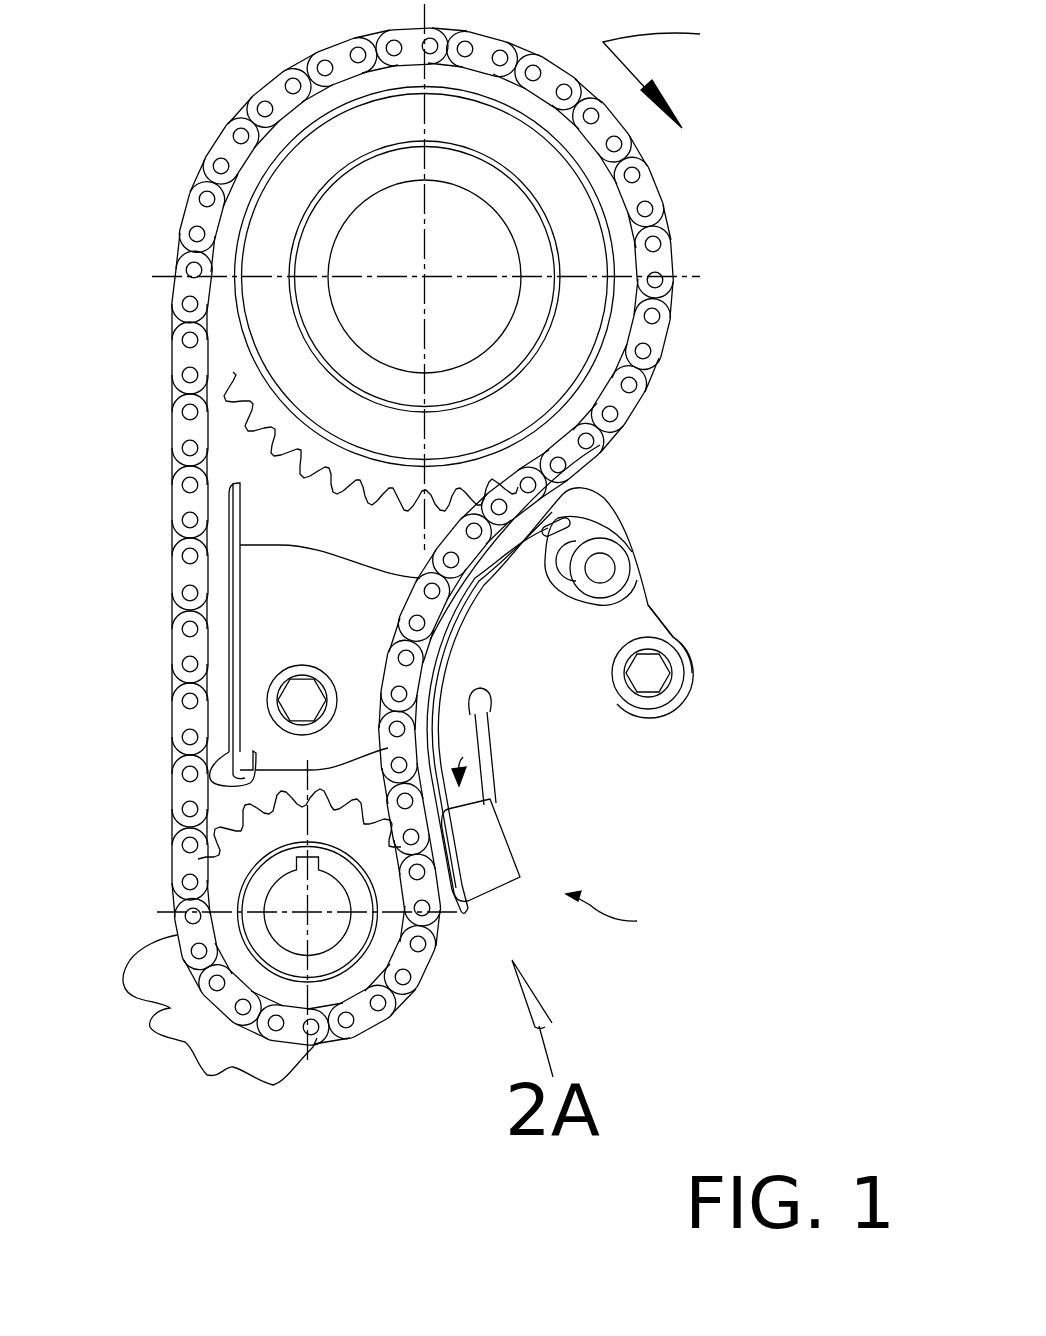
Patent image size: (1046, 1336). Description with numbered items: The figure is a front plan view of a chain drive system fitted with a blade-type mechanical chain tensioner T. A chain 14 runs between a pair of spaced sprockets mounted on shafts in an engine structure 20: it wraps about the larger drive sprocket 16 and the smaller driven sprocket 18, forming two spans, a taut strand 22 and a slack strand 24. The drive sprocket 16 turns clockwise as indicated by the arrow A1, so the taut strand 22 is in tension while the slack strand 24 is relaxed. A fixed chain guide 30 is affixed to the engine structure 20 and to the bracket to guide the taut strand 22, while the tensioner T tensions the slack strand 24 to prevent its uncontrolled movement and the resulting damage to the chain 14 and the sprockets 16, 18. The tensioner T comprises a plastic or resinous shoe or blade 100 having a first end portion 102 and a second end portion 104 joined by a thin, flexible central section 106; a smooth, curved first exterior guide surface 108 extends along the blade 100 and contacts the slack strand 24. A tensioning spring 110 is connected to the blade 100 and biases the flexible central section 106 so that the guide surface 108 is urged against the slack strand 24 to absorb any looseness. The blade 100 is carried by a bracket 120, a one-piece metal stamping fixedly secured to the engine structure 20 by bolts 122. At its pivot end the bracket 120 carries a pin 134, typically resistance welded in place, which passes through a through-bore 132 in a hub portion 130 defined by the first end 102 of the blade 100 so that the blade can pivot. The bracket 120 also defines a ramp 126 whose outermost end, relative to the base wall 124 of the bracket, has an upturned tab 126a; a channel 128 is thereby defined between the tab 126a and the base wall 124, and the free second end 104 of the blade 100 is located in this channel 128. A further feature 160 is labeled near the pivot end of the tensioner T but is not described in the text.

The chain 14 is at (633, 393).
The drive sprocket 16 is at (242, 396).
The driven sprocket 18 is at (225, 876).
The engine structure 20 is at (172, 1008).
The taut strand 22 is at (185, 572).
The slack strand 24 is at (443, 542).
The fixed chain guide 30 is at (222, 667).
The blade 100 is at (452, 620).
The first end portion 102 is at (580, 518).
The second end portion 104 is at (463, 913).
The central section 106 is at (473, 692).
The first exterior guide surface 108 is at (437, 598).
The tensioning spring 110 is at (580, 470).
The bracket 120 is at (680, 642).
The bolts 122 is at (280, 720).
The base wall 124 is at (587, 682).
The ramp 126 is at (487, 783).
The upturned tab 126a is at (480, 840).
The channel 128 is at (463, 757).
The hub portion 130 is at (637, 588).
The through-bore 132 is at (605, 558).
The pin 134 is at (607, 568).
The pivot end of arm 160 is at (597, 508).
The arrow A1 is at (669, 73).
The tensioner T is at (613, 910).